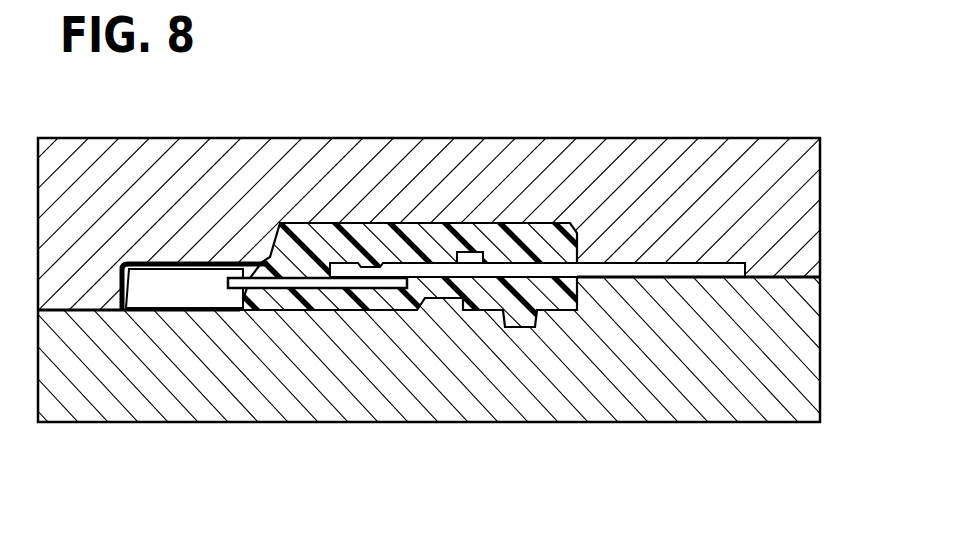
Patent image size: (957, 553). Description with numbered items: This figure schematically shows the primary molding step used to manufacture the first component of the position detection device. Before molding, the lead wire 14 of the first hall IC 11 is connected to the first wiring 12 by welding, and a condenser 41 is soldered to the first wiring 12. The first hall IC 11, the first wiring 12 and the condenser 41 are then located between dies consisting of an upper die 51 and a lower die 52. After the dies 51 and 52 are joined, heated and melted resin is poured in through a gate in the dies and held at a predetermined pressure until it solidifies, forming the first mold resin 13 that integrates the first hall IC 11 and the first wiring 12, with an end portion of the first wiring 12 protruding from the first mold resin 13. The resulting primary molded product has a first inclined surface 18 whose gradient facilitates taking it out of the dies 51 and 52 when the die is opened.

The upper die 51 is at (127, 180).
The lower die 52 is at (123, 387).
The first hall IC 11 is at (183, 290).
The first wiring 12 is at (627, 273).
The first mold resin 13 is at (417, 240).
The lead wire 14 is at (282, 288).
The first inclined surface 18 is at (268, 250).
The condenser 41 is at (468, 252).